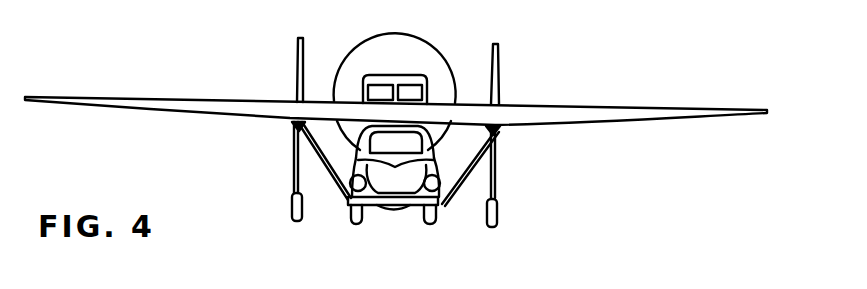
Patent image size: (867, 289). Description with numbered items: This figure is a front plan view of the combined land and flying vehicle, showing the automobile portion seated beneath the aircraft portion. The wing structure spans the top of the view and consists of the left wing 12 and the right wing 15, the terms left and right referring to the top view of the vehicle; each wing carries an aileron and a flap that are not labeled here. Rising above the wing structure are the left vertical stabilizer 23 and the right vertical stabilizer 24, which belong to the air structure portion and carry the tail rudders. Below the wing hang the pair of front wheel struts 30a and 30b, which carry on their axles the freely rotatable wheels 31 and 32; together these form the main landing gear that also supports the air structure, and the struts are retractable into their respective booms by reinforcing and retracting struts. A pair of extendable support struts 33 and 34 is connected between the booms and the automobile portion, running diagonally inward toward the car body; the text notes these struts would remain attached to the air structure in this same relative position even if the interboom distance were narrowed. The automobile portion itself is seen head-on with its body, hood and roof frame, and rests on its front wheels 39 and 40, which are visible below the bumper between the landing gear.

The left wing 12 is at (638, 107).
The right wing 15 is at (396, 94).
The left vertical stabilizer 23 is at (303, 50).
The right vertical stabilizer 24 is at (499, 58).
The front wheel strut 30a is at (294, 173).
The front wheel strut 30b is at (496, 182).
The wheel 31 is at (498, 213).
The wheel 32 is at (292, 207).
The extendable support strut 33 is at (295, 147).
The extendable support strut 34 is at (496, 156).
The front wheel 39 is at (430, 225).
The front wheel 40 is at (357, 225).